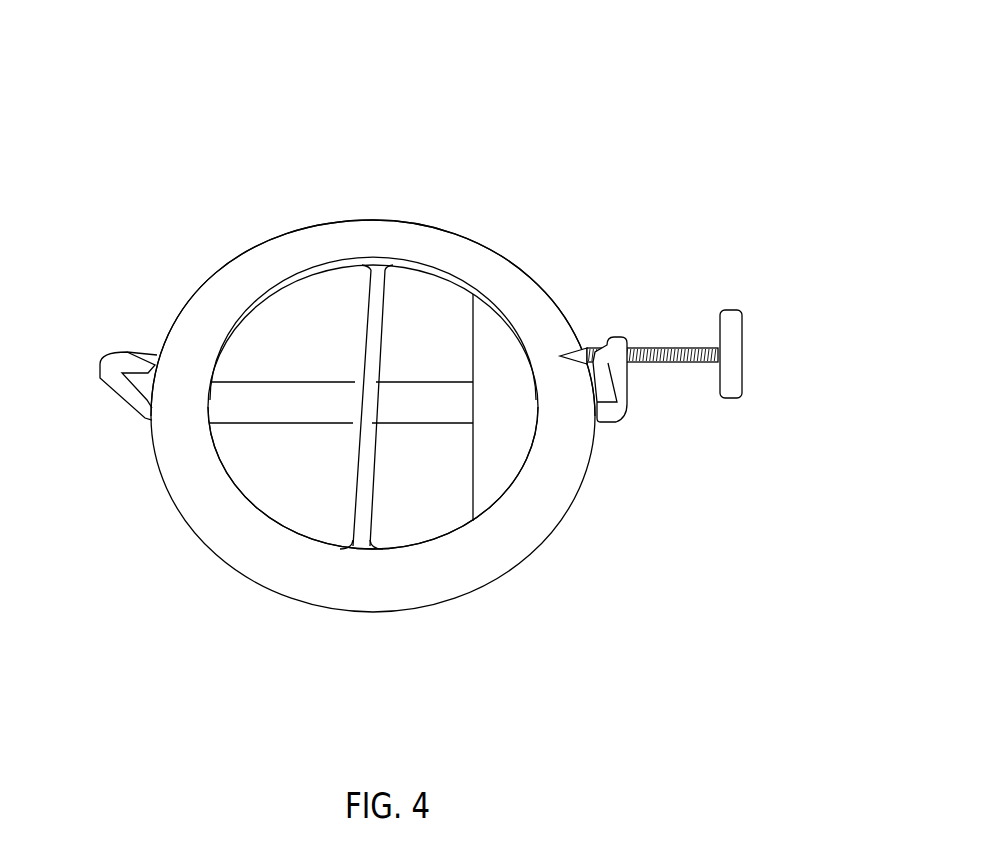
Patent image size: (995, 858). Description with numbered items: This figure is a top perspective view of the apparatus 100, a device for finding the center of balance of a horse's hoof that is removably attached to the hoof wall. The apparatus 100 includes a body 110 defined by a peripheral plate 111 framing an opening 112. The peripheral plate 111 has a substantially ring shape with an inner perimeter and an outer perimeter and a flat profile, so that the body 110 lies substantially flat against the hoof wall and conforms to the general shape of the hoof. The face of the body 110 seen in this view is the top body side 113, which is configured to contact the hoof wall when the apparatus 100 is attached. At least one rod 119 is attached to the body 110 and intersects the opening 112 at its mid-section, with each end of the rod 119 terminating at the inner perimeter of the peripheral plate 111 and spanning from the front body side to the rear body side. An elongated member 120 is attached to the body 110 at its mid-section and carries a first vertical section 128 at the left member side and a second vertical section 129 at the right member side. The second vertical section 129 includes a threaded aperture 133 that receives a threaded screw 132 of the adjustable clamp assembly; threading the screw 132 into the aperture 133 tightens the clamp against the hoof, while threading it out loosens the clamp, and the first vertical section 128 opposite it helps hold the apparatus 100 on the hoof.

The apparatus 100 is at (410, 350).
The body 110 is at (503, 289).
The peripheral plate 111 is at (512, 543).
The opening 112 is at (312, 502).
The top body side 113 is at (388, 237).
The rod 119 is at (357, 525).
The elongated member 120 is at (278, 394).
The first vertical section 128 is at (122, 398).
The second vertical section 129 is at (622, 392).
The threaded screw 132 is at (657, 348).
The threaded aperture 133 is at (603, 337).